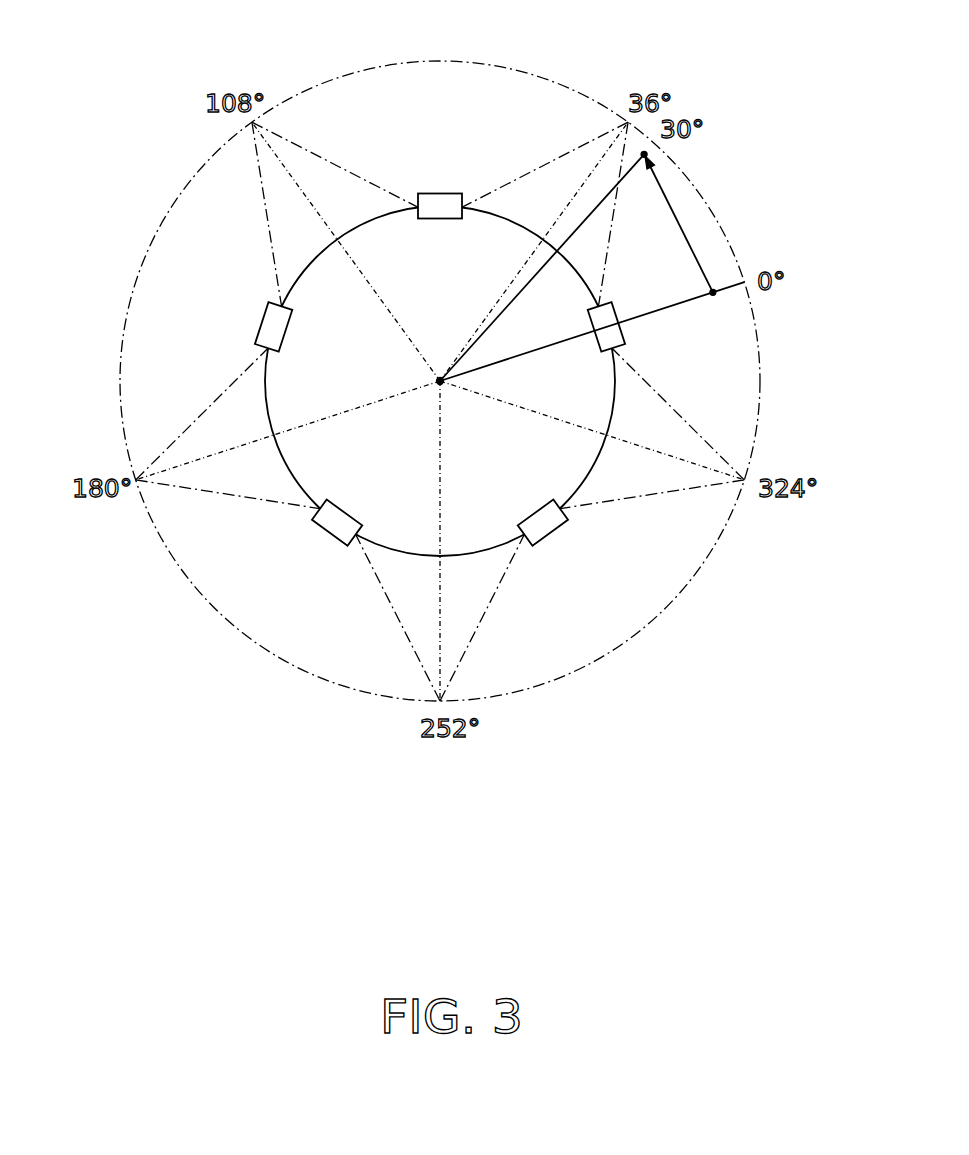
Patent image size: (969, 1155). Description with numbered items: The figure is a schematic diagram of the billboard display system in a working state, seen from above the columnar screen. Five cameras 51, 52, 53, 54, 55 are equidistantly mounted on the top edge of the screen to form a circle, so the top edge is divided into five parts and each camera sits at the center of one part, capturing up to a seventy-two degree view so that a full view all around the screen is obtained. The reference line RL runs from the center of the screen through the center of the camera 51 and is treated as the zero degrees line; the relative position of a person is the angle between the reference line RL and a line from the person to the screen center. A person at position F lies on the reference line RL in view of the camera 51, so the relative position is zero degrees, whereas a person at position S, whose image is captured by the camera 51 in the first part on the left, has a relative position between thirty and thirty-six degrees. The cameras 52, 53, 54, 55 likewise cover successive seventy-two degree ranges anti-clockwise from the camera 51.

The camera 51 is at (622, 335).
The camera 52 is at (438, 202).
The camera 53 is at (270, 327).
The camera 54 is at (334, 522).
The camera 55 is at (546, 521).
The reference line RL is at (700, 296).
The position S is at (648, 157).
The position F is at (713, 289).